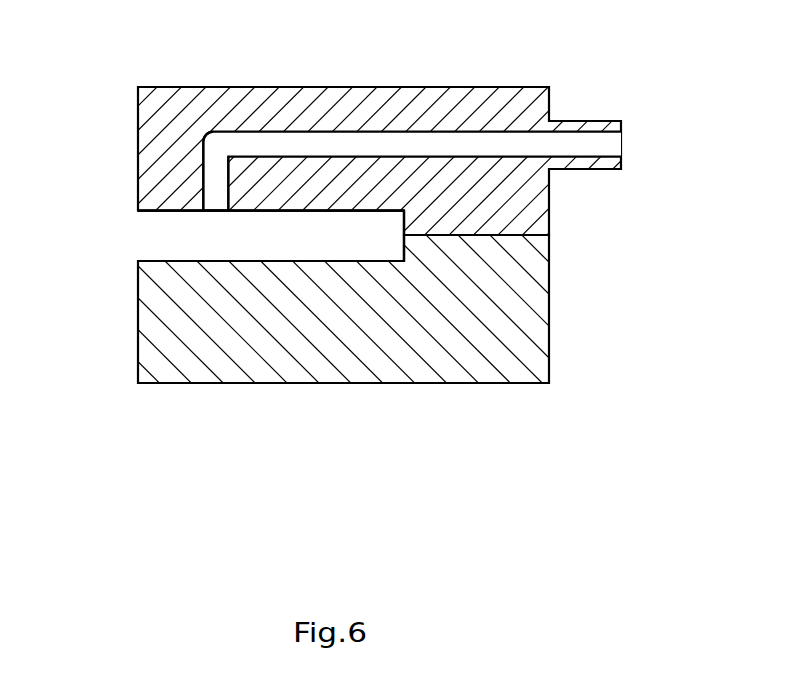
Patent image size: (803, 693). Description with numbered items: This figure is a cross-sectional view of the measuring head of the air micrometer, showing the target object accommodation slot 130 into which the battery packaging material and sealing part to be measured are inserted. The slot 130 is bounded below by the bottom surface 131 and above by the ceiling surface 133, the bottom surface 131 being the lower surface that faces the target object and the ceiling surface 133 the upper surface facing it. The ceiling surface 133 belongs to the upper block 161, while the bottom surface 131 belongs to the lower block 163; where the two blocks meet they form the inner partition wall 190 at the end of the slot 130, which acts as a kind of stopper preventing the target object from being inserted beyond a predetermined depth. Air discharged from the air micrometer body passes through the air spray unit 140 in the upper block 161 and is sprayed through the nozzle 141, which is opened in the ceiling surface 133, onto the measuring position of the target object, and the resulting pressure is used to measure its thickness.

The target object accommodation slot 130 is at (178, 247).
The bottom surface 131 is at (306, 261).
The ceiling surface 133 is at (164, 212).
The air spray unit 140 is at (597, 133).
The nozzle 141 is at (208, 183).
The upper block 161 is at (342, 87).
The lower block 163 is at (452, 383).
The inner partition wall 190 is at (404, 251).